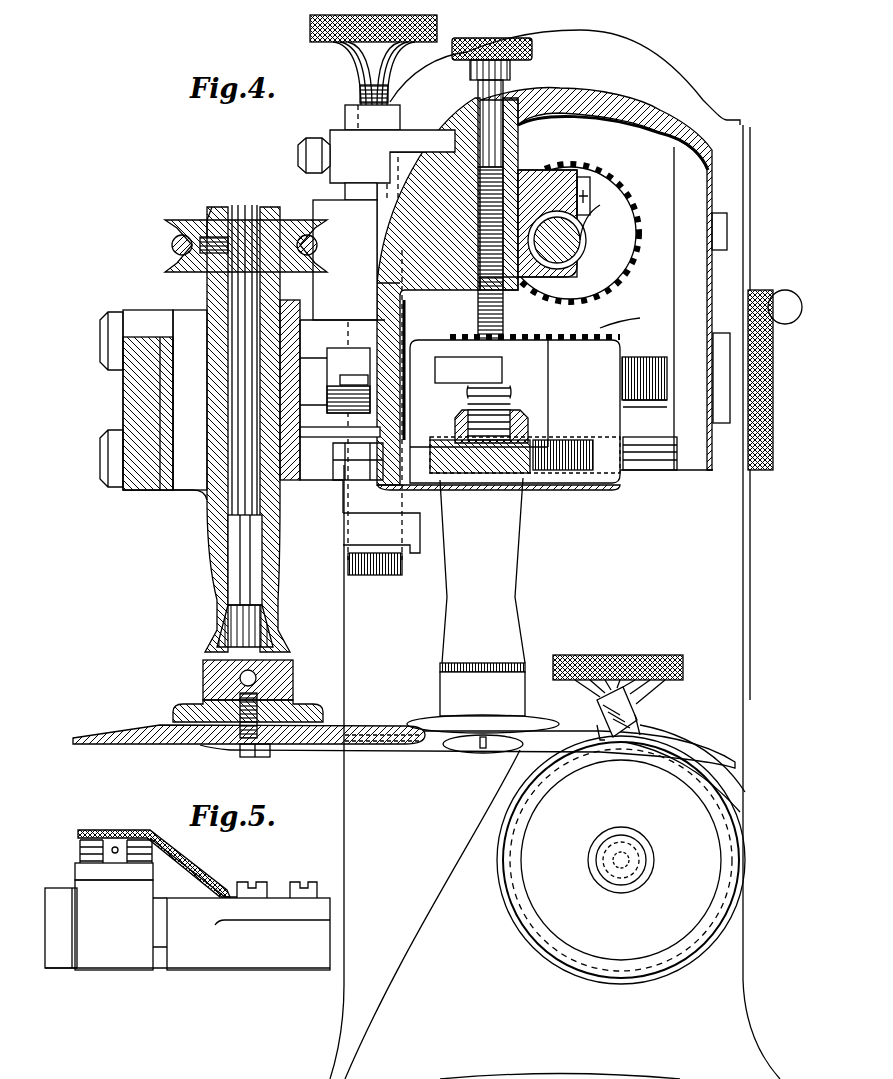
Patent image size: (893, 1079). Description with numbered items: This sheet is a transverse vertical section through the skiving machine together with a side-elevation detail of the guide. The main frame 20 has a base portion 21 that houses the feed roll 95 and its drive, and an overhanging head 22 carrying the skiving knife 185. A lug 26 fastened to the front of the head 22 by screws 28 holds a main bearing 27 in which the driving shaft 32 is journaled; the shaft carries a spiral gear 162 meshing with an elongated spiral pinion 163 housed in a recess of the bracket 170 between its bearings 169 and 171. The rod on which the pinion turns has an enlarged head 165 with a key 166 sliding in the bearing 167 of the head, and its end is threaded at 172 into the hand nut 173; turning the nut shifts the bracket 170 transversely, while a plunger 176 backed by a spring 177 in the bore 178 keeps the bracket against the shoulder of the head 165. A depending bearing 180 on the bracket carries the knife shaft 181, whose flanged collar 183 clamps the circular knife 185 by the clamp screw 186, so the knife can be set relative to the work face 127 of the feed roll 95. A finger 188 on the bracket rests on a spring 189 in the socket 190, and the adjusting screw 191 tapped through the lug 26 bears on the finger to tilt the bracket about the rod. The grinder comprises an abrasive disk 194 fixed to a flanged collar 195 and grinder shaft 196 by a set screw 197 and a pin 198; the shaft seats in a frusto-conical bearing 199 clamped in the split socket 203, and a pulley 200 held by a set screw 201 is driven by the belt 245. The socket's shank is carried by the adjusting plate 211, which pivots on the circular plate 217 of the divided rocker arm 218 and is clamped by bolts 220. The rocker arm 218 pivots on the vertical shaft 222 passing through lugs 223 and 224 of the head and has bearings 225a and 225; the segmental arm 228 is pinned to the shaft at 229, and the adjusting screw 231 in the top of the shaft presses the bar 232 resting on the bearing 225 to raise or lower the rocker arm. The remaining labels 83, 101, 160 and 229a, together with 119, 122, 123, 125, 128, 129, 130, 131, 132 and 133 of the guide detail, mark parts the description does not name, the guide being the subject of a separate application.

In FIG. 4, the main frame 20 is at (735, 560).
In FIG. 4, the base portion 21 is at (735, 956).
In FIG. 4, the overhanging arm or head 22 is at (610, 95).
In FIG. 4, the projection or lug 26 is at (430, 292).
In FIG. 4, the main bearing 27 is at (552, 185).
In FIG. 4, the screws 28 is at (583, 185).
In FIG. 4, the driving shaft 32 is at (580, 240).
In FIG. 4, the wheel hub 83 is at (640, 838).
In FIG. 4, the feed roll 95 is at (507, 892).
In FIG. 5, the feed roll 95 is at (58, 950).
In FIG. 4, the knob 101 is at (612, 655).
In FIG. 5, the base plate 119 is at (252, 962).
In FIG. 5, the support block 122 is at (192, 915).
In FIG. 5, the clamp blocks 123 is at (262, 882).
In FIG. 5, the spring arm 125 is at (210, 885).
In FIG. 5, the work face 127 is at (125, 962).
In FIG. 4, the spring 128 is at (590, 715).
In FIG. 4, the spring 129 is at (640, 700).
In FIG. 5, the spring 129 is at (112, 846).
In FIG. 5, the screw 130 is at (120, 846).
In FIG. 5, the block 131 is at (75, 870).
In FIG. 4, the arm 132 is at (690, 735).
In FIG. 4, the leaf spring 133 is at (590, 695).
In FIG. 5, the leaf spring 133 is at (75, 850).
In FIG. 4, the wheel rim 160 is at (497, 862).
In FIG. 5, the wheel rim 160 is at (70, 955).
In FIG. 4, the spiral gear 162 is at (608, 225).
In FIG. 4, the elongated spiral pinion 163 is at (556, 321).
In FIG. 4, the enlarged head 165 is at (340, 350).
In FIG. 4, the key 166 is at (352, 375).
In FIG. 4, the bearing 167 is at (338, 405).
In FIG. 4, the bearing 169 is at (645, 356).
In FIG. 4, the bracket 170 is at (436, 350).
In FIG. 4, the bearing 171 is at (628, 395).
In FIG. 4, the threaded portion 172 is at (668, 420).
In FIG. 4, the hand operated nut 173 is at (765, 470).
In FIG. 4, the plunger 176 is at (640, 475).
In FIG. 4, the spring 177 is at (550, 480).
In FIG. 4, the bore 178 is at (615, 490).
In FIG. 4, the bearing 180 is at (495, 585).
In FIG. 4, the skiving knife shaft 181 is at (500, 663).
In FIG. 4, the flanged collar 183 is at (440, 690).
In FIG. 4, the skiving knife 185 is at (415, 752).
In FIG. 4, the clamp screw 186 is at (470, 750).
In FIG. 4, the finger or lug 188 is at (490, 370).
In FIG. 4, the spring 189 is at (510, 396).
In FIG. 4, the socket 190 is at (525, 420).
In FIG. 4, the adjusting screw 191 is at (490, 120).
In FIG. 4, the abrasive disk 194 is at (95, 733).
In FIG. 4, the flanged collar 195 is at (203, 668).
In FIG. 4, the grinder shaft 196 is at (225, 272).
In FIG. 4, the set screw 197 is at (258, 757).
In FIG. 4, the pin 198 is at (240, 677).
In FIG. 4, the bearing 199 is at (205, 292).
In FIG. 4, the pulley 200 is at (178, 222).
In FIG. 4, the set screw 201 is at (214, 207).
In FIG. 4, the split socket 203 is at (185, 495).
In FIG. 4, the adjusting plate 211 is at (160, 410).
In FIG. 4, the circular plate 217 is at (123, 380).
In FIG. 4, the divided rocker arm 218 is at (307, 318).
In FIG. 4, the clamp bolts 220 is at (100, 340).
In FIG. 4, the vertical shaft 222 is at (348, 115).
In FIG. 4, the lug 223 is at (425, 135).
In FIG. 4, the lug 224 is at (365, 490).
In FIG. 4, the bearing 225 is at (313, 203).
In FIG. 4, the bearing 225a is at (410, 540).
In FIG. 4, the segmental arm 228 is at (315, 432).
In FIG. 4, the pin 229 is at (358, 461).
In FIG. 4, the nut 229a is at (312, 140).
In FIG. 4, the adjusting screw 231 is at (345, 58).
In FIG. 4, the bar 232 is at (345, 190).
In FIG. 4, the belt 245 is at (172, 245).